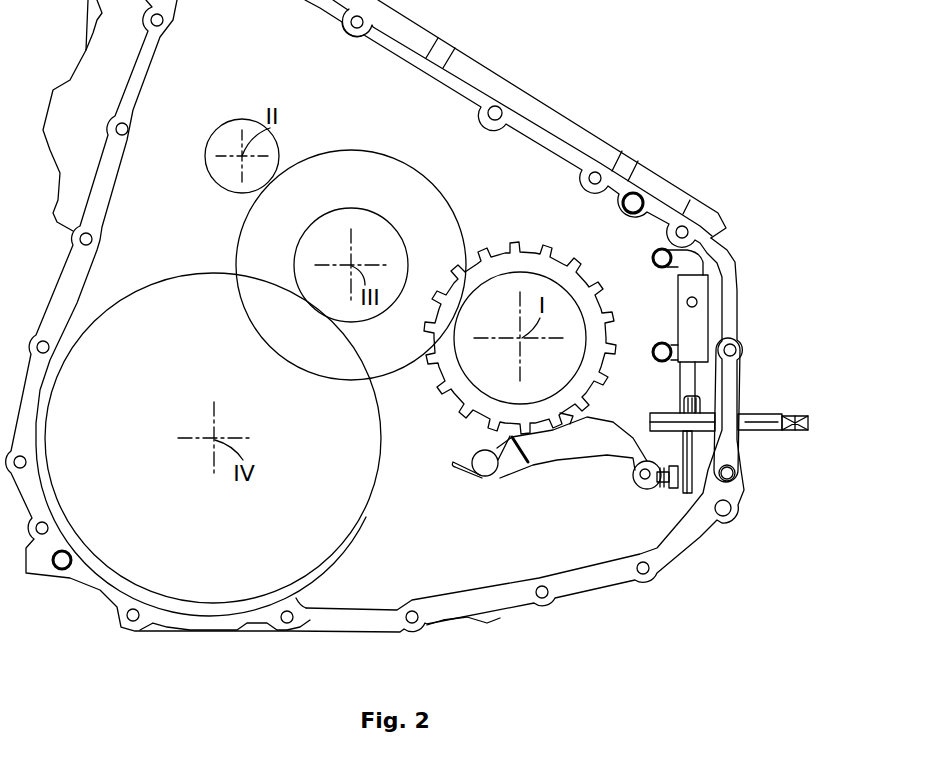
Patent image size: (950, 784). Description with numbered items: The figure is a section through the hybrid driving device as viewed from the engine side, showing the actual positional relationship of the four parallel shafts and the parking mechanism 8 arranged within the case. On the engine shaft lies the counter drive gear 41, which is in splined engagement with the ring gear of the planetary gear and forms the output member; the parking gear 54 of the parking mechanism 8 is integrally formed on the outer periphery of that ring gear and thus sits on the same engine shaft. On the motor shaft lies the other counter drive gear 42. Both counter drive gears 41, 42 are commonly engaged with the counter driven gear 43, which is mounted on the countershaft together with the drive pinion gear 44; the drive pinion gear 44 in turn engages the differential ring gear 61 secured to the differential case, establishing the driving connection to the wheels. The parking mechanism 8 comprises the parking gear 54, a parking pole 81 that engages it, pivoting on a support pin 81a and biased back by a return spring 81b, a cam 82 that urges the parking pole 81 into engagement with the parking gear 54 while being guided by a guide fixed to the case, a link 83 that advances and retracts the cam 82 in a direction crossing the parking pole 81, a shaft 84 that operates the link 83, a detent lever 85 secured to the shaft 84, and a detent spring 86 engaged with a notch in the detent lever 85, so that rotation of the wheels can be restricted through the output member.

The parking mechanism 8 is at (719, 383).
The counter drive gear 41 is at (503, 250).
The counter drive gear 42 is at (245, 120).
The counter driven gear 43 is at (373, 150).
The drive pinion gear 44 is at (293, 268).
The parking gear 54 is at (583, 266).
The differential ring gear 61 is at (165, 283).
The parking pole 81 is at (565, 452).
The support pin 81a is at (482, 475).
The return spring 81b is at (465, 470).
The cam 82 is at (636, 485).
The link 83 is at (672, 488).
The shaft 84 is at (760, 434).
The detent lever 85 is at (740, 490).
The detent spring 86 is at (677, 380).